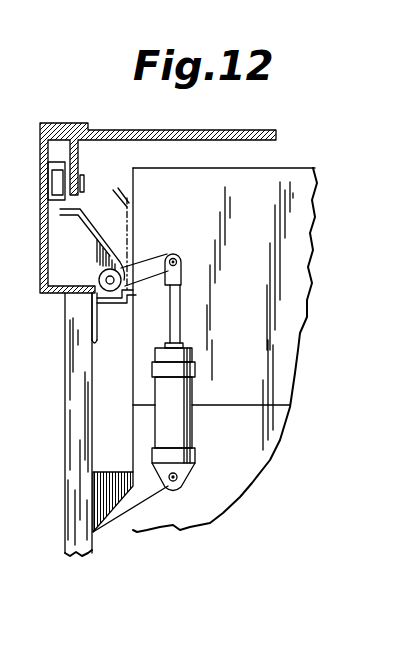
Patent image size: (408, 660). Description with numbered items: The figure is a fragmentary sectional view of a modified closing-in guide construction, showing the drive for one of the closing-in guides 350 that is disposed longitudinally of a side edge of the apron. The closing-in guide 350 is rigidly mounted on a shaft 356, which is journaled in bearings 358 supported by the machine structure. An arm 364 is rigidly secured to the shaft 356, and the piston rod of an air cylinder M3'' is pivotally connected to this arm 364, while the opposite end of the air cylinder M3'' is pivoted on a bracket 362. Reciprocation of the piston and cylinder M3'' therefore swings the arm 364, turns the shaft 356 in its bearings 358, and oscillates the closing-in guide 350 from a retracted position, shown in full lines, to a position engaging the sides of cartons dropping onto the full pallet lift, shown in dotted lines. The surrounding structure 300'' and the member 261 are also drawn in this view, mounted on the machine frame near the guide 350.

The wall frame 300'' is at (154, 337).
The closing-in guide 350 is at (103, 238).
The shaft 356 is at (100, 271).
The bearings 358 is at (97, 297).
The channel 261 is at (97, 341).
The arm 364 is at (156, 253).
The air cylinder M3'' is at (201, 388).
The bracket 362 is at (160, 491).